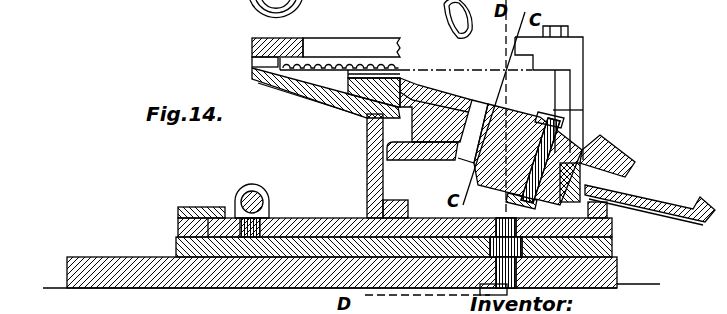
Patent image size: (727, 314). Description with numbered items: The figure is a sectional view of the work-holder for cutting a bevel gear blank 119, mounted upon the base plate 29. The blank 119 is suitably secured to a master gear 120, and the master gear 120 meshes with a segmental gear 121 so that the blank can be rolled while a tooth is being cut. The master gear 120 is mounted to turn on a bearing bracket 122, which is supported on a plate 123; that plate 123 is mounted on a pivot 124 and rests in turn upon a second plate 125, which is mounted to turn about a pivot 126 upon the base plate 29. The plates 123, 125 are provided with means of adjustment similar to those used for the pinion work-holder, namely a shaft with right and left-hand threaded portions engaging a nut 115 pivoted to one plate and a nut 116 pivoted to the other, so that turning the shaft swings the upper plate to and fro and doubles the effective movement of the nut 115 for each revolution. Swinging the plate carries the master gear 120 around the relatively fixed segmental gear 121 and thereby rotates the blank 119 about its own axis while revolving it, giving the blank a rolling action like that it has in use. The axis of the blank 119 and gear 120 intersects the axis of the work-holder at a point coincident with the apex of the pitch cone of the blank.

The base plate 29 is at (604, 270).
The second plate 125 is at (598, 246).
The plate 123 is at (317, 211).
The nut 116 is at (243, 194).
The nut 115 is at (254, 184).
The bearing bracket 122 is at (368, 151).
The segmental gear 121 is at (276, 46).
The bevel gear blank 119 is at (617, 156).
The master gear 120 is at (652, 196).
The pivot 124 is at (501, 222).
The pivot 126 is at (516, 289).